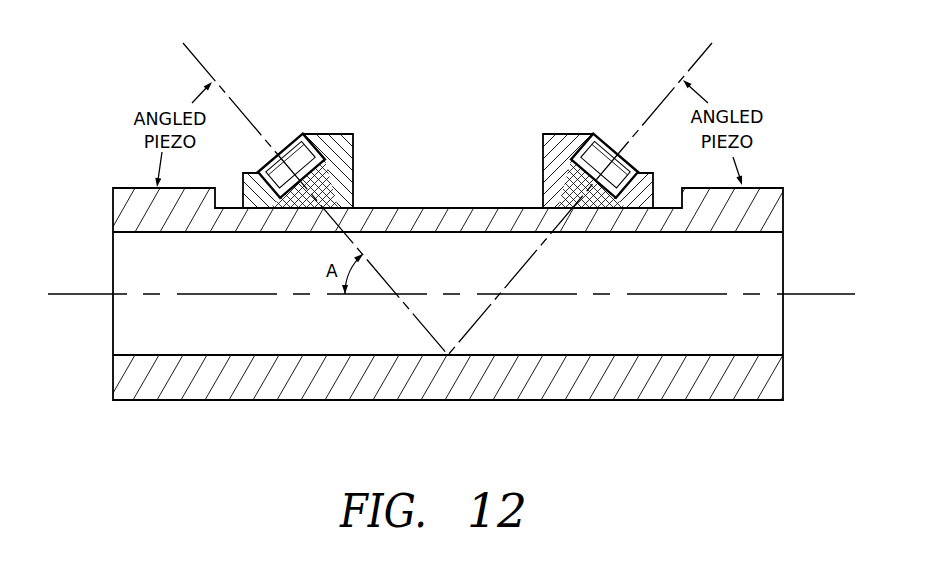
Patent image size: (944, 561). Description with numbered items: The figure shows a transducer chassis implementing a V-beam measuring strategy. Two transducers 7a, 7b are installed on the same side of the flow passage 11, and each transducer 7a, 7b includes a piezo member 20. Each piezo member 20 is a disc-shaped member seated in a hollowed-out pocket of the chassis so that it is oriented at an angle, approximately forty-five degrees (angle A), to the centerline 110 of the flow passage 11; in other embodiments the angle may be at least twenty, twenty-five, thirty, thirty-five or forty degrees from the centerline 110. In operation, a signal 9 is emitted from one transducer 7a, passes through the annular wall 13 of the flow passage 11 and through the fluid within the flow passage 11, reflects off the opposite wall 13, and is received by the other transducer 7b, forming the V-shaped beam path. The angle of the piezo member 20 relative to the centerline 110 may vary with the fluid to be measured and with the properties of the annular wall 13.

The transducer 7a is at (275, 125).
The transducer 7b is at (622, 127).
The signal 9 is at (200, 58).
The flow passage 11 is at (740, 312).
The annular wall 13 is at (763, 215).
The piezo member 20 is at (287, 163).
The centerline 110 is at (97, 293).